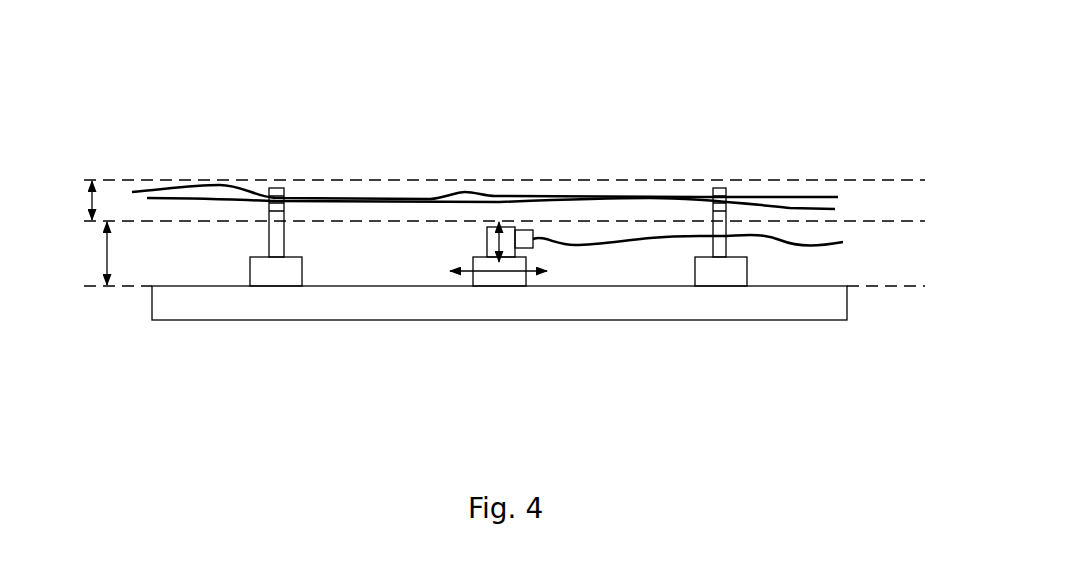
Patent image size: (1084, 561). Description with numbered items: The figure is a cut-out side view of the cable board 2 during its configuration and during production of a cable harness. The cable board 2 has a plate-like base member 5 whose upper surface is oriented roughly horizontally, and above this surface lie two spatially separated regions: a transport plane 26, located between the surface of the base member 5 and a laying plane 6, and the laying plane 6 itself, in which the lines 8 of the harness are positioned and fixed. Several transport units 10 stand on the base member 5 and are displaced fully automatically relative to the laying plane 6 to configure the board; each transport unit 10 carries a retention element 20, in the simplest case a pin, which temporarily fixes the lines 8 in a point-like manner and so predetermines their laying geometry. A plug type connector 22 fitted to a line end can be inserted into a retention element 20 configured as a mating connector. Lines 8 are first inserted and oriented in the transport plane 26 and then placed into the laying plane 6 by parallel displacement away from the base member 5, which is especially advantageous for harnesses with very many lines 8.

The cable board 2 is at (128, 45).
The base member 5 is at (823, 315).
The laying plane 6 is at (82, 199).
The lines 8 is at (841, 237).
The transport units 10 is at (285, 290).
The retention element 20 is at (276, 186).
The plug type connector 22 is at (524, 229).
The transport plane 26 is at (100, 265).